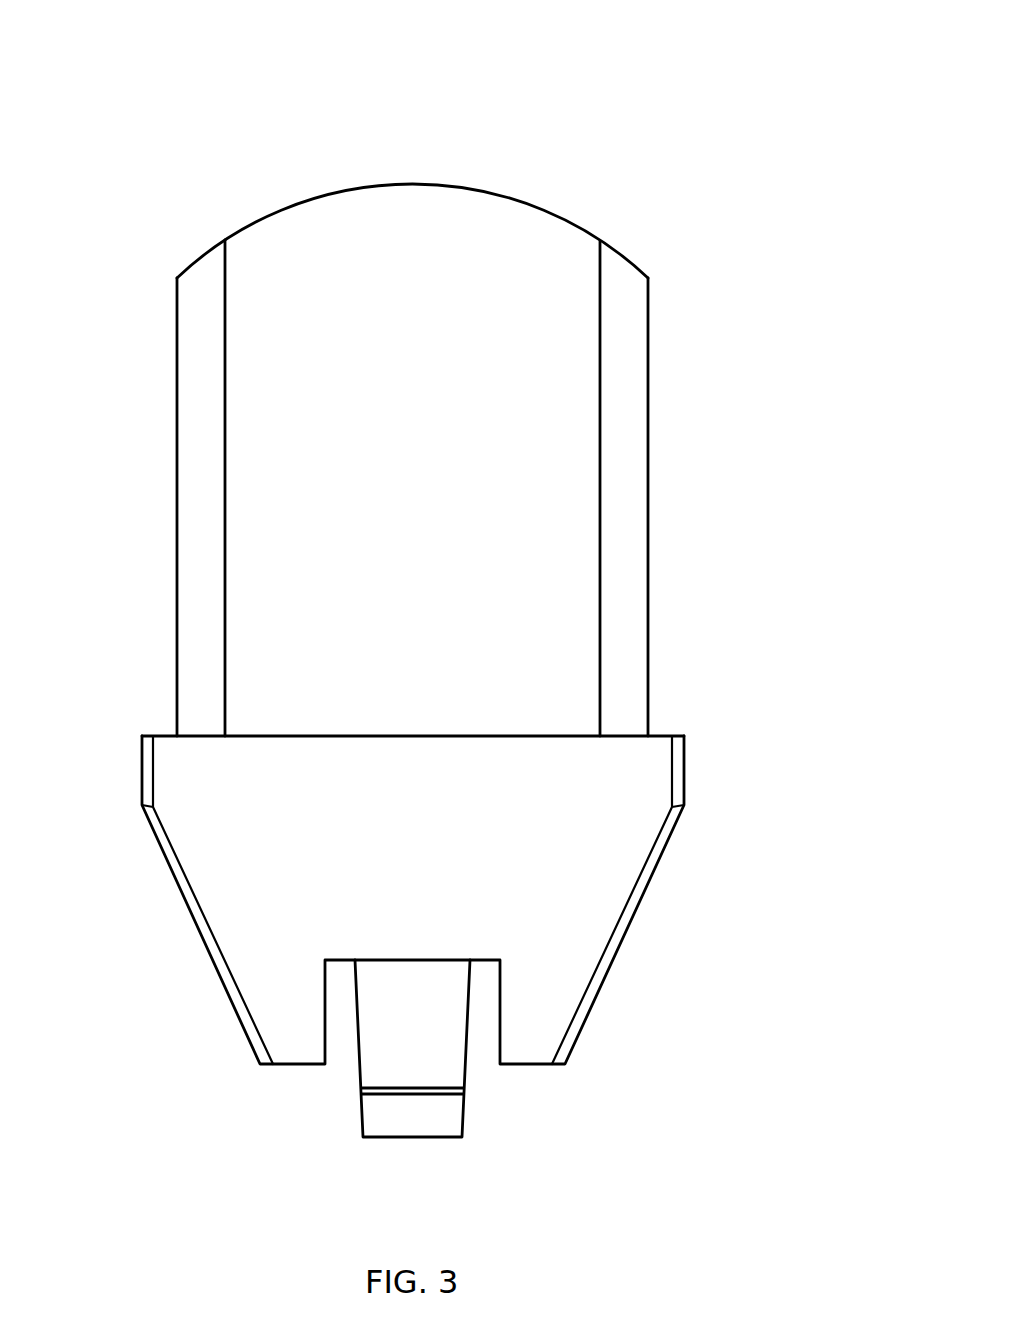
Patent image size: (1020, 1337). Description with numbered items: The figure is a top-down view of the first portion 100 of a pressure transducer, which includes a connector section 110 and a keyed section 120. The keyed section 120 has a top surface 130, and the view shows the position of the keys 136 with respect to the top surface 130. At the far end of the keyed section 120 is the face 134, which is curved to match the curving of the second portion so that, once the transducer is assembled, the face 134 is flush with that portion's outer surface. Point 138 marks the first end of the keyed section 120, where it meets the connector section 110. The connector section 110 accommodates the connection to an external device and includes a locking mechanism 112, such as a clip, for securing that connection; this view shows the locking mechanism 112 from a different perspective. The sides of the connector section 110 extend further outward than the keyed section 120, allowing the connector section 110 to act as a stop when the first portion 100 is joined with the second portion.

The first portion 100 is at (738, 50).
The connector section 110 is at (723, 736).
The locking mechanism 112 is at (422, 1122).
The keyed section 120 is at (723, 163).
The top surface 130 is at (303, 582).
The face 134 is at (422, 185).
The key 136 is at (203, 290).
The point 138 is at (173, 735).